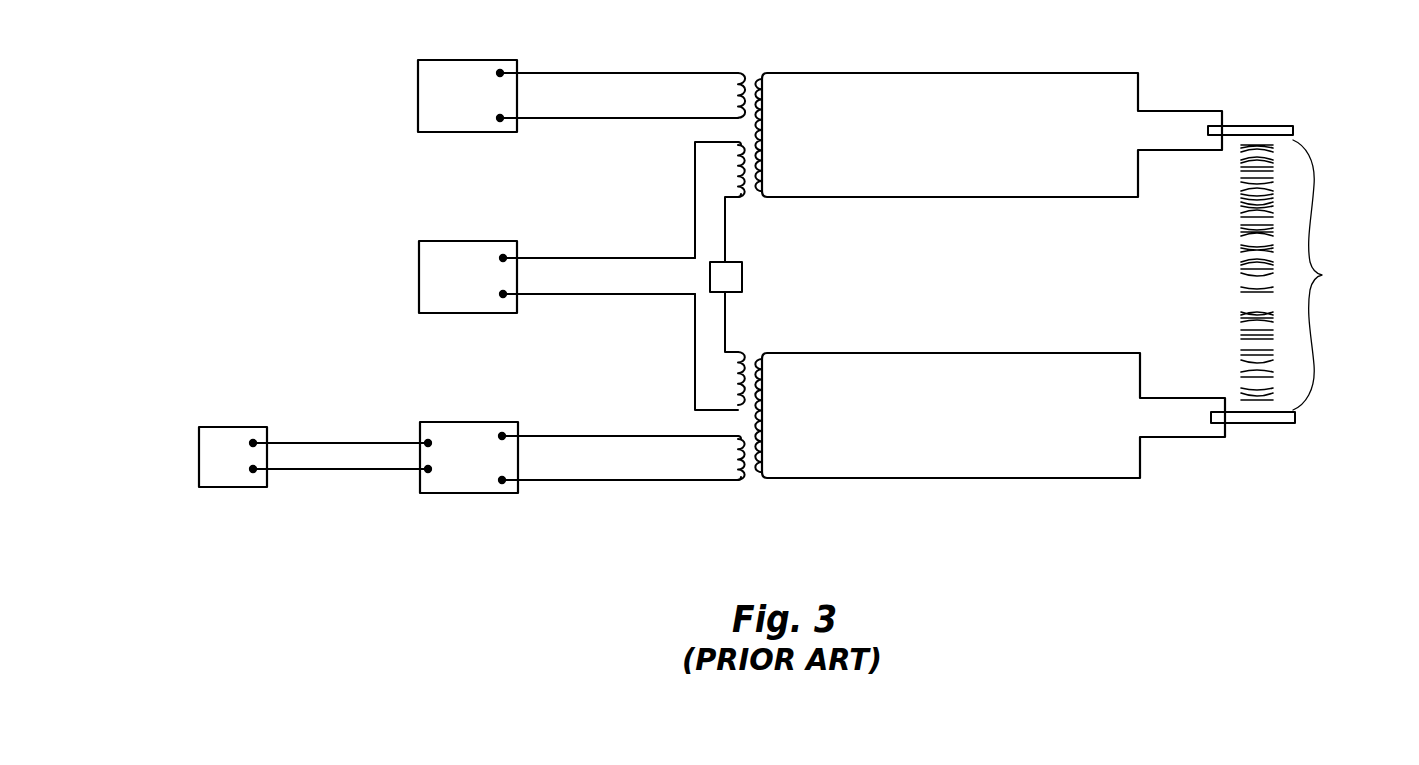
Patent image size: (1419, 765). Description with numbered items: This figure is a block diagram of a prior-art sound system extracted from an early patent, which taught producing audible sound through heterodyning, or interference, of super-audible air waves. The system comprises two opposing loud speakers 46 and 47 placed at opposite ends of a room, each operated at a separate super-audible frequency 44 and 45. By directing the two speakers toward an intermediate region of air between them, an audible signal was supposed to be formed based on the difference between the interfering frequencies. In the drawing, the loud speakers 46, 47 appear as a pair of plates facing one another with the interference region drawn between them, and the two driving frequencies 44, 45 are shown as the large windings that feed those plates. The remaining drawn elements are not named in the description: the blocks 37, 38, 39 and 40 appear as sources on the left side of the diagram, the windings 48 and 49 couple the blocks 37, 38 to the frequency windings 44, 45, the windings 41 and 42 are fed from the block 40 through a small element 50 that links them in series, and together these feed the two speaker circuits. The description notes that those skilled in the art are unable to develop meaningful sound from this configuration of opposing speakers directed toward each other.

The power source / driver unit 37 is at (430, 117).
The power source unit 38 is at (448, 430).
The control unit 39 is at (208, 472).
The power source unit 40 is at (430, 297).
The primary winding 41 is at (708, 165).
The primary winding 42 is at (713, 392).
The super-audible frequency 44 is at (765, 115).
The super-audible frequency 45 is at (768, 405).
The loud speaker 46 is at (1268, 122).
The loud speaker 47 is at (1298, 418).
The primary winding 48 is at (737, 98).
The primary winding 49 is at (733, 455).
The capacitor / connecting element 50 is at (705, 272).